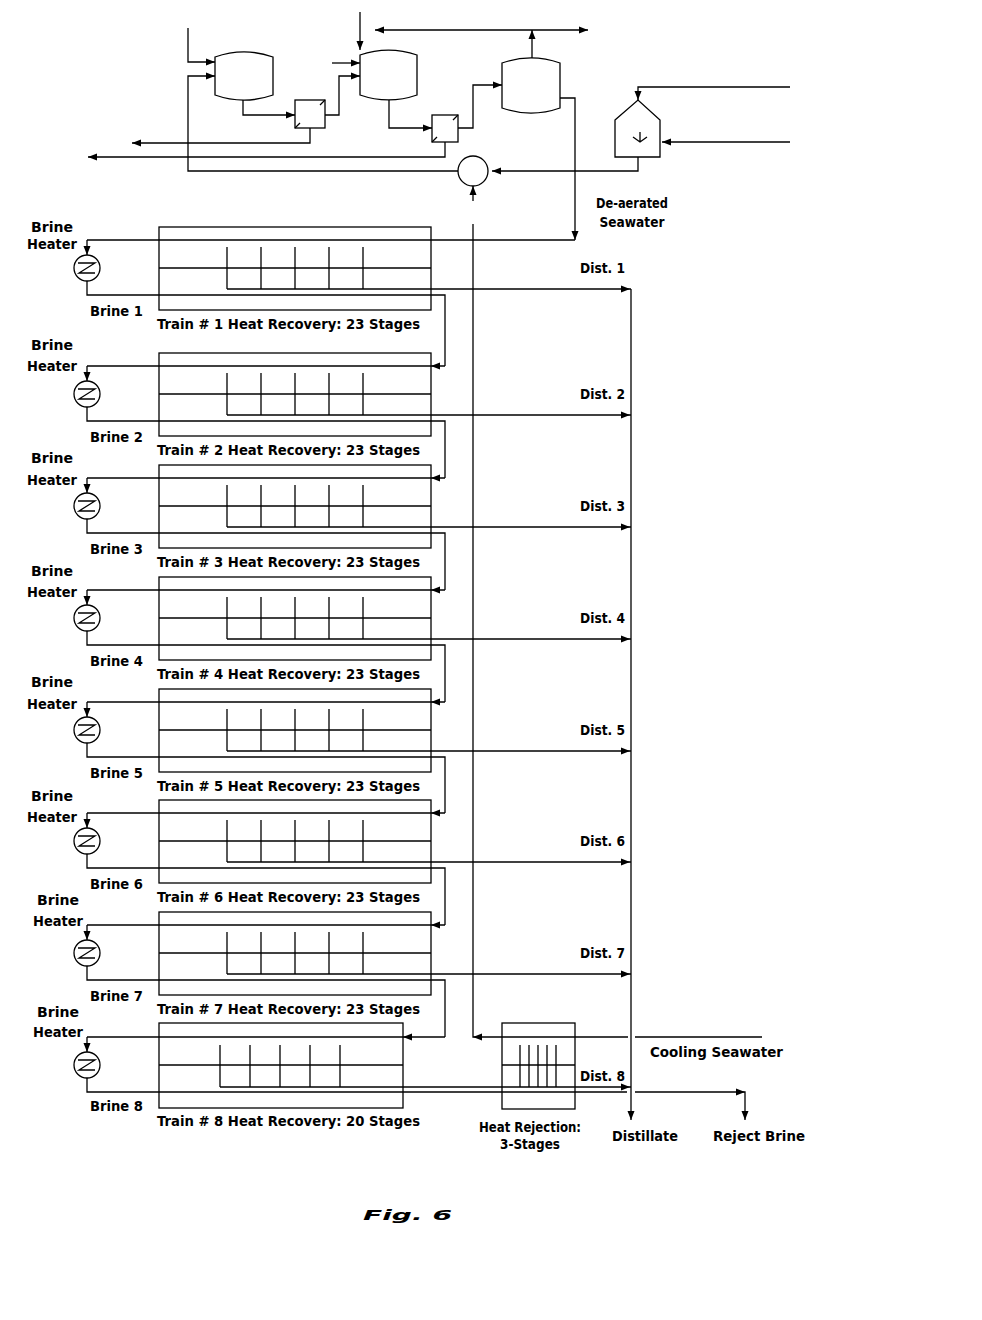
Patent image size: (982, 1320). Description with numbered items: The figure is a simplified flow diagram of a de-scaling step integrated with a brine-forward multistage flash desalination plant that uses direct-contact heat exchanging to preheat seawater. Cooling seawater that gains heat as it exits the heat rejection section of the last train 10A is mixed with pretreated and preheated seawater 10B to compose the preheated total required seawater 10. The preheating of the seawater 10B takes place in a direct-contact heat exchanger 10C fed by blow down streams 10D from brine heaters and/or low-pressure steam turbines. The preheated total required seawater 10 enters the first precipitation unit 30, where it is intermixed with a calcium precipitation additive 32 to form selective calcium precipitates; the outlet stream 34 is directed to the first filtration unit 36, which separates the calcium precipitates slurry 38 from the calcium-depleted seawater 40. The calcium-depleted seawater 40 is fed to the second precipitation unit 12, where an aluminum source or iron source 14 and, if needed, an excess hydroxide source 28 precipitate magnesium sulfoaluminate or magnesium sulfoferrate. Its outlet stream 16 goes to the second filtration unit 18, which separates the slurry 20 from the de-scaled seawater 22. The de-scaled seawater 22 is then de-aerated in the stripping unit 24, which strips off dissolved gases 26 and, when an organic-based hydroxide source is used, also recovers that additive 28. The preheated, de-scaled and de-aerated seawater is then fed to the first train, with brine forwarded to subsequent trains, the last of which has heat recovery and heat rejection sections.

The preheated total required seawater 10 is at (320, 133).
The cooling seawater exiting the heat rejection section of the last train 10A is at (480, 598).
The pretreated and preheated seawater 10B is at (732, 152).
The direct-contact heat exchanger 10C is at (597, 137).
The blow down streams 10D is at (713, 82).
The second precipitation unit 12 is at (388, 75).
The aluminum source or iron source 14 is at (333, 65).
The outlet stream from the second precipitation unit 16 is at (410, 118).
The second filtration unit 18 is at (445, 128).
The slurry of magnesium sulfoaluminate or magnesium sulfoferrate 20 is at (254, 153).
The de-scaled seawater 22 is at (480, 105).
The stripping unit 24 is at (531, 85).
The dissolved gases 26 is at (481, 43).
The excess hydroxide source 28 is at (409, 31).
The first precipitation unit 30 is at (244, 76).
The calcium precipitation additive 32 is at (187, 45).
The outlet stream from the first precipitation unit 34 is at (269, 111).
The first filtration unit 36 is at (310, 114).
The calcium precipitates slurry 38 is at (209, 139).
The calcium-depleted seawater 40 is at (342, 94).